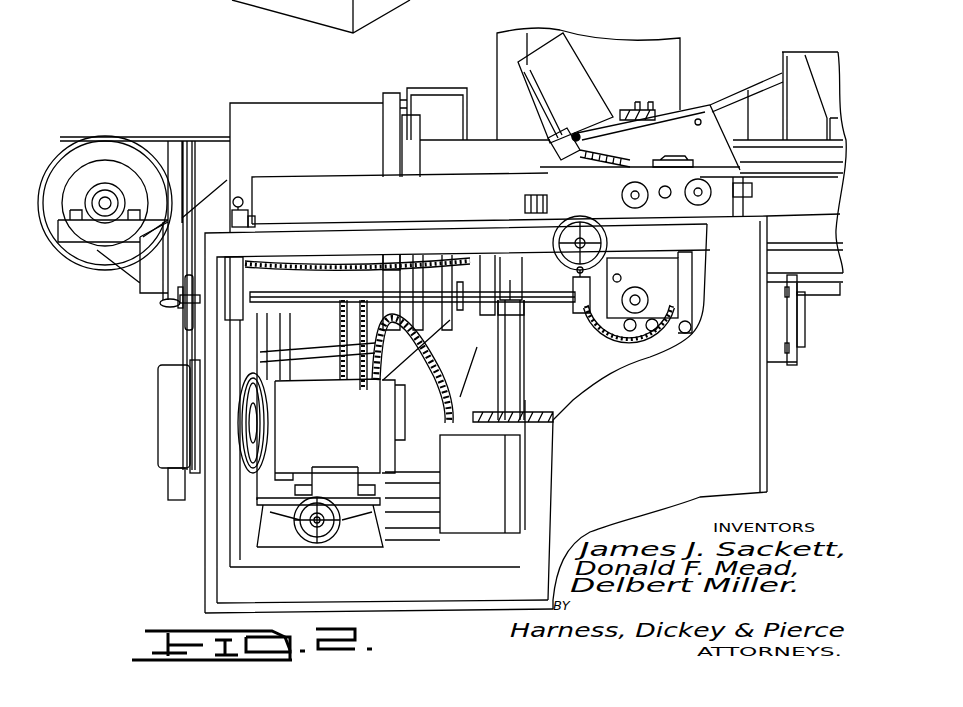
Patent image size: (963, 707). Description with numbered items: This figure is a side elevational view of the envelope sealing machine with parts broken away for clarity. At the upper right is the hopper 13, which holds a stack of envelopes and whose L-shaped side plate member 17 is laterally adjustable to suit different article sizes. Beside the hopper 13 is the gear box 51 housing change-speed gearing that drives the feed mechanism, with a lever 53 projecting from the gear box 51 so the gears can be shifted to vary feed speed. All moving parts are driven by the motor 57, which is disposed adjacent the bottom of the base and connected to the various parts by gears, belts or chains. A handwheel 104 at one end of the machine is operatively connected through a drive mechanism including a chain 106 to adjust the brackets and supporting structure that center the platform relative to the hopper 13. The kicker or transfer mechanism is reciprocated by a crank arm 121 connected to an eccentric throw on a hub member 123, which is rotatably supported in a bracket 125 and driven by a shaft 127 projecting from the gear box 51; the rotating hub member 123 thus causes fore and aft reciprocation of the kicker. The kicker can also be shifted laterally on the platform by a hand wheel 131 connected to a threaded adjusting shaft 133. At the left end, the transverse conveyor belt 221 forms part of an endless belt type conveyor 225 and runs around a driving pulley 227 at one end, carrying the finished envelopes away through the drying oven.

The hopper 13 is at (717, 97).
The side plate member 17 is at (572, 57).
The gear box 51 is at (722, 207).
The lever 53 is at (752, 190).
The motor 57 is at (350, 428).
The handwheel 104 is at (605, 242).
The chain 106 is at (387, 258).
The crank arm 121 is at (508, 258).
The hub member 123 is at (502, 300).
The bracket 125 is at (487, 258).
The shaft 127 is at (622, 340).
The hand wheel 131 is at (180, 310).
The threaded adjusting shaft 133 is at (300, 293).
The conveyor belt 221 is at (128, 138).
The conveyor 225 is at (202, 133).
The driving pulley 227 is at (90, 160).